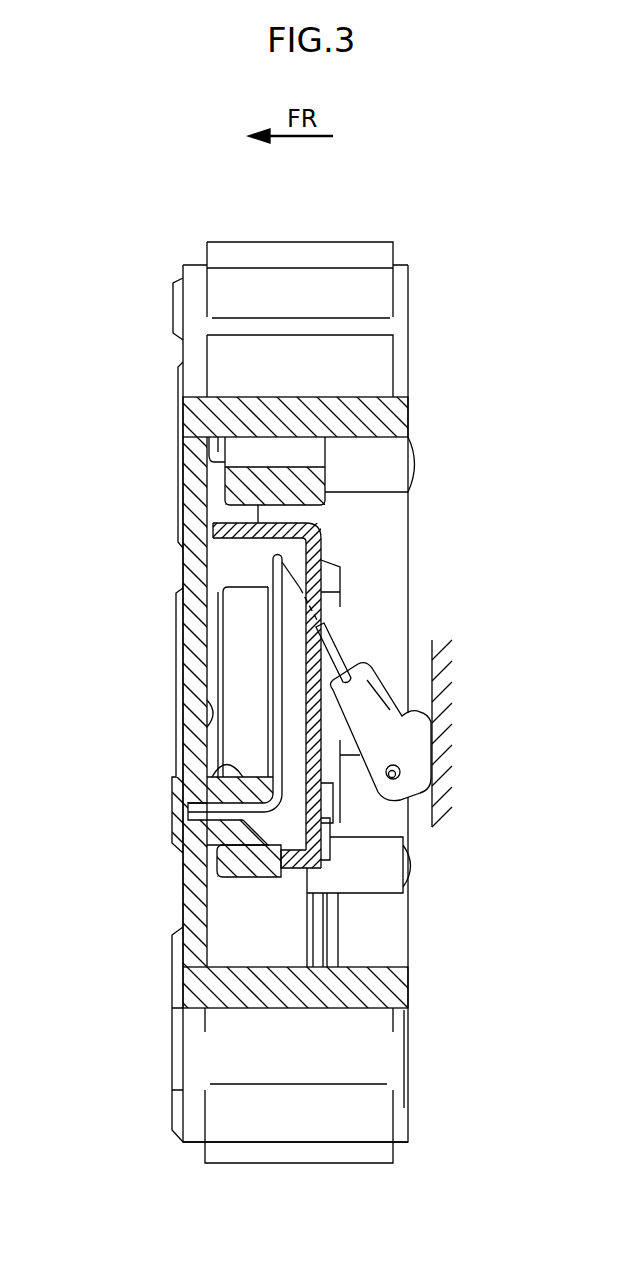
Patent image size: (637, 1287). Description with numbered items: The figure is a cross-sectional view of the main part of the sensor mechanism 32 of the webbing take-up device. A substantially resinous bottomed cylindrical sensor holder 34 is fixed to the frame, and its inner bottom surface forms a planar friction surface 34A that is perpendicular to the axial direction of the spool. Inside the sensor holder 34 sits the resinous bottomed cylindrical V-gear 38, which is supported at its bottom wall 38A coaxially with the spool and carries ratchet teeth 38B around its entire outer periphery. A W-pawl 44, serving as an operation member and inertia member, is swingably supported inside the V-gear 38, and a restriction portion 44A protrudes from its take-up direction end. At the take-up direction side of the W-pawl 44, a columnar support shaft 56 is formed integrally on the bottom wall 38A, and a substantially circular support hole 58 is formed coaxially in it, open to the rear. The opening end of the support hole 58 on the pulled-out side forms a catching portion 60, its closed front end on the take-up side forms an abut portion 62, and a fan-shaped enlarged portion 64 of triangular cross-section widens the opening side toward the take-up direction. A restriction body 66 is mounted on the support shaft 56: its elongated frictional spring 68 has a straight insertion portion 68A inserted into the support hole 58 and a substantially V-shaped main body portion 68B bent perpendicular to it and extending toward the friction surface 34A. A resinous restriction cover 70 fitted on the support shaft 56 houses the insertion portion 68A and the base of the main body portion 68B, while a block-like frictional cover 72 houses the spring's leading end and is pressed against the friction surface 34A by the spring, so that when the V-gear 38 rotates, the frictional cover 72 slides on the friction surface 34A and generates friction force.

The sensor mechanism 32 is at (130, 164).
The sensor holder 34 is at (450, 737).
The friction surface 34A is at (432, 828).
The V-gear 38 is at (183, 265).
The bottom wall 38A is at (207, 567).
The ratchet teeth 38B is at (320, 242).
The W-pawl 44 is at (318, 643).
The restriction portion 44A is at (213, 487).
The support shaft 56 is at (218, 753).
The support hole 58 is at (188, 805).
The catching portion 60 is at (276, 809).
The abut portion 62 is at (205, 822).
The enlarged portion 64 is at (305, 852).
The restriction body 66 is at (334, 538).
The frictional spring 68 is at (255, 746).
The insertion portion 68A is at (238, 812).
The main body portion 68B is at (345, 670).
The restriction cover 70 is at (216, 520).
The frictional cover 72 is at (432, 702).